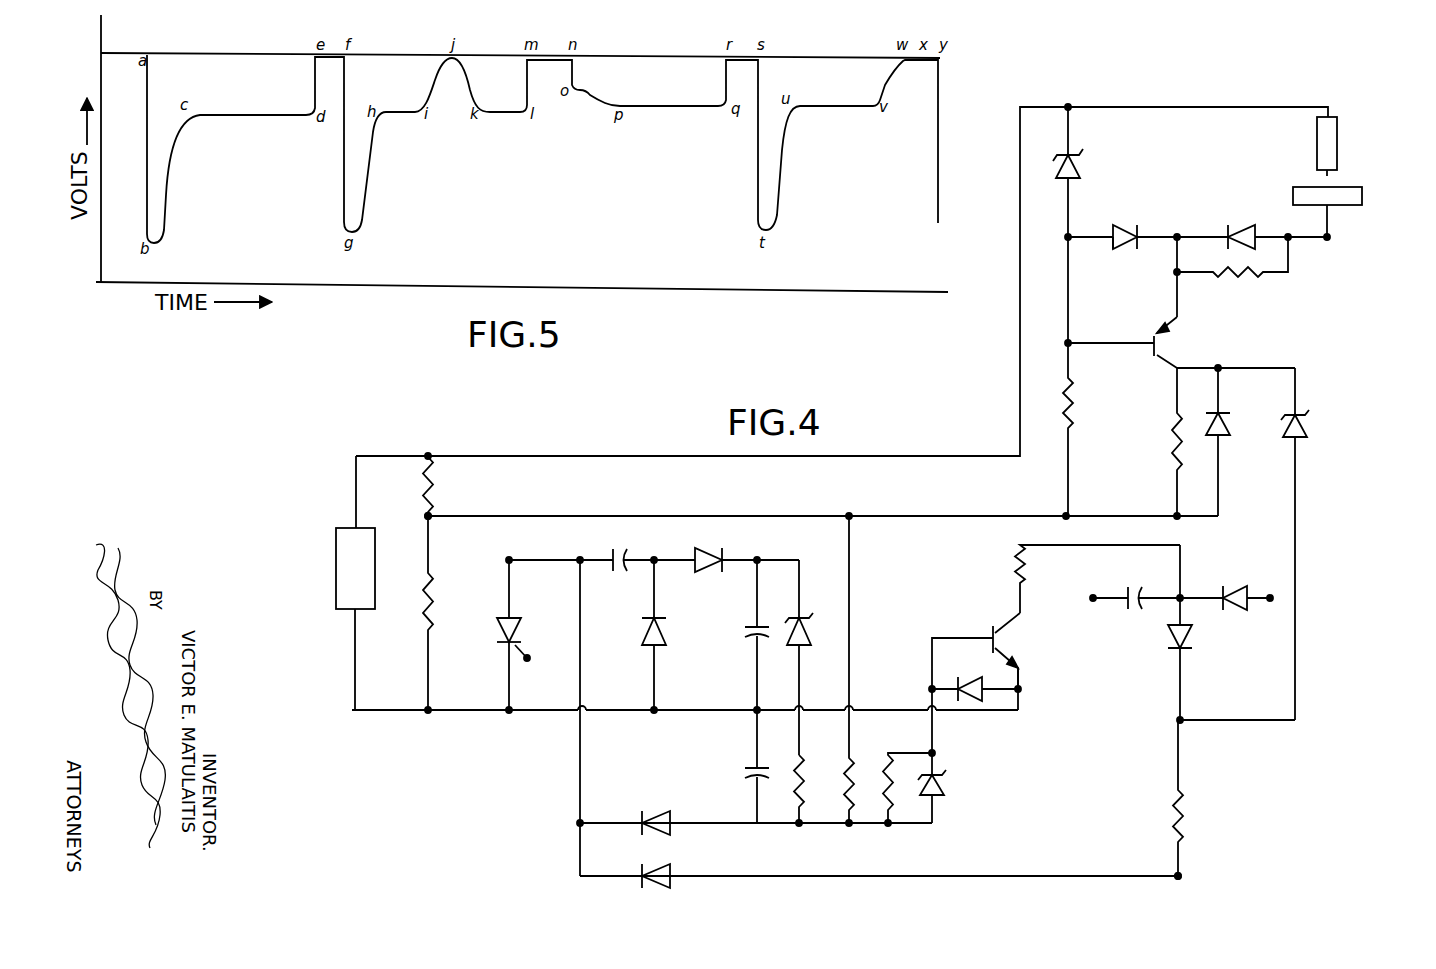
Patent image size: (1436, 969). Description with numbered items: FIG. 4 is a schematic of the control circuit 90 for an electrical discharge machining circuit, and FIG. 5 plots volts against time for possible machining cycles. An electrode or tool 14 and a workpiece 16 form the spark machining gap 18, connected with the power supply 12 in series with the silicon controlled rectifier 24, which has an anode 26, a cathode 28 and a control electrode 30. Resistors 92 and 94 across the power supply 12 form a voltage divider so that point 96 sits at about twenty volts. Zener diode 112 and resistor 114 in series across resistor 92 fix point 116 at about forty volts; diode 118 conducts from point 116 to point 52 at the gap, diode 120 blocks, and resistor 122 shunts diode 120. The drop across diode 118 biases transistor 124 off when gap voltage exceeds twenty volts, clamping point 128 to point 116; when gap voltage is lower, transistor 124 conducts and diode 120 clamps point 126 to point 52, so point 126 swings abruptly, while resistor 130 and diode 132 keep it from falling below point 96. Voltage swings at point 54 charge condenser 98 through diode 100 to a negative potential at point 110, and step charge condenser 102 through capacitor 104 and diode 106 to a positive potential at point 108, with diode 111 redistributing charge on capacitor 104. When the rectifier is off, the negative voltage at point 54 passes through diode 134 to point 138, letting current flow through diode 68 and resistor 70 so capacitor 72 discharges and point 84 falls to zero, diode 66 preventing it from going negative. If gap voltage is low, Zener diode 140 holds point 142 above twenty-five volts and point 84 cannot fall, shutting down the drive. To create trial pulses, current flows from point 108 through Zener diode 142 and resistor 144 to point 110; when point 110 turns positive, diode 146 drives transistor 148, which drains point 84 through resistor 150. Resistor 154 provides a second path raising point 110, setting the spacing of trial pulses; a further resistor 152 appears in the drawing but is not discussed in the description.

The power supply 12 is at (336, 553).
The electrode or tool 14 is at (1317, 148).
The workpiece 16 is at (1362, 200).
The machining gap 18 is at (1340, 180).
The silicon controlled rectifier 24 is at (500, 633).
The anode 26 is at (528, 660).
The cathode 28 is at (512, 690).
The control electrode 30 is at (512, 600).
The point 52 is at (1326, 240).
The point 54 is at (519, 540).
The diode 66 is at (1245, 614).
The diode 68 is at (1166, 632).
The resistor 70 is at (1172, 822).
The capacitor 72 is at (1125, 590).
The point 84 is at (1180, 598).
The control circuit 90 is at (494, 753).
The resistor 92 is at (436, 494).
The resistor 94 is at (434, 602).
The point 96 is at (431, 518).
The condenser 98 is at (752, 765).
The diode 100 is at (657, 808).
The condenser 102 is at (750, 636).
The capacitor 104 is at (612, 556).
The diode 106 is at (707, 558).
The point 108 is at (757, 560).
The point 110 is at (752, 825).
The diode 111 is at (646, 628).
The Zener diode 112 is at (1084, 166).
The resistor 114 is at (1076, 406).
The point 116 is at (1068, 237).
The diode 118 is at (1120, 250).
The diode 120 is at (1244, 205).
The resistor 122 is at (1250, 276).
The transistor 124 is at (1168, 346).
The point 126 is at (1218, 368).
The point 128 is at (1185, 205).
The resistor 130 is at (1172, 432).
The diode 132 is at (1225, 437).
The diode 134 is at (668, 886).
The point 138 is at (1182, 876).
The Zener diode 140 is at (1304, 431).
The Zener diode 142 is at (808, 638).
The resistor 144 is at (803, 773).
The diode 146 is at (938, 770).
The transistor 148 is at (1005, 646).
The resistor 150 is at (1015, 562).
The resistor 152 is at (903, 745).
The resistor 154 is at (848, 806).